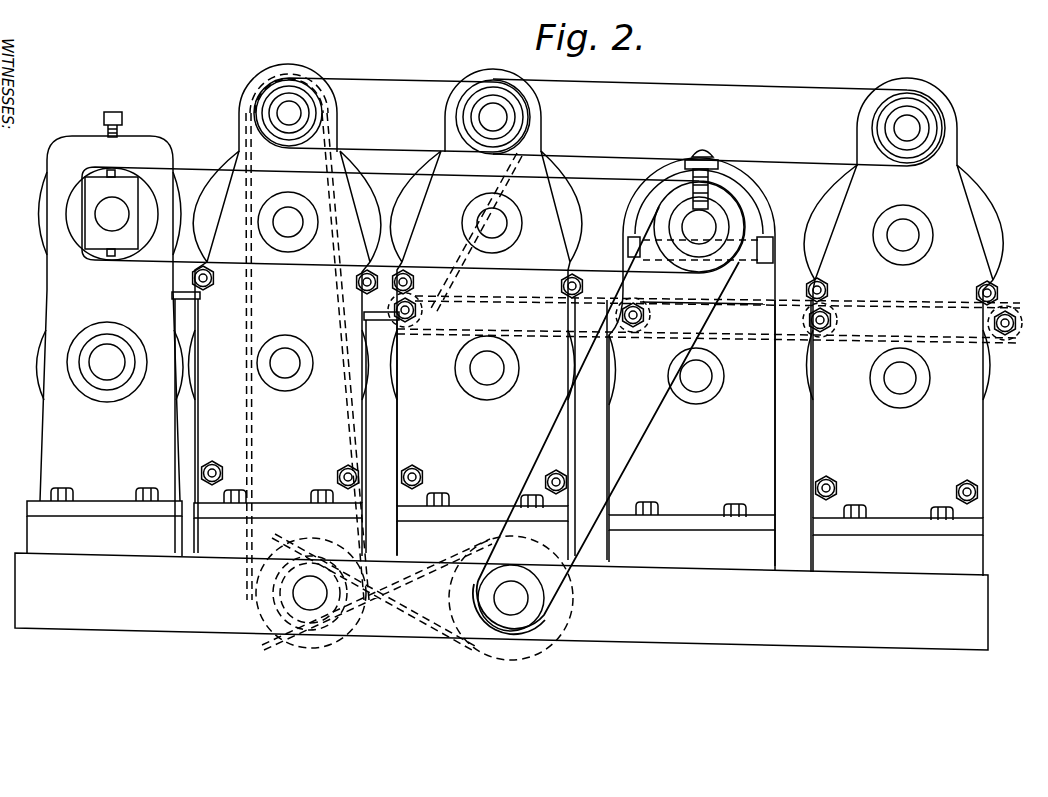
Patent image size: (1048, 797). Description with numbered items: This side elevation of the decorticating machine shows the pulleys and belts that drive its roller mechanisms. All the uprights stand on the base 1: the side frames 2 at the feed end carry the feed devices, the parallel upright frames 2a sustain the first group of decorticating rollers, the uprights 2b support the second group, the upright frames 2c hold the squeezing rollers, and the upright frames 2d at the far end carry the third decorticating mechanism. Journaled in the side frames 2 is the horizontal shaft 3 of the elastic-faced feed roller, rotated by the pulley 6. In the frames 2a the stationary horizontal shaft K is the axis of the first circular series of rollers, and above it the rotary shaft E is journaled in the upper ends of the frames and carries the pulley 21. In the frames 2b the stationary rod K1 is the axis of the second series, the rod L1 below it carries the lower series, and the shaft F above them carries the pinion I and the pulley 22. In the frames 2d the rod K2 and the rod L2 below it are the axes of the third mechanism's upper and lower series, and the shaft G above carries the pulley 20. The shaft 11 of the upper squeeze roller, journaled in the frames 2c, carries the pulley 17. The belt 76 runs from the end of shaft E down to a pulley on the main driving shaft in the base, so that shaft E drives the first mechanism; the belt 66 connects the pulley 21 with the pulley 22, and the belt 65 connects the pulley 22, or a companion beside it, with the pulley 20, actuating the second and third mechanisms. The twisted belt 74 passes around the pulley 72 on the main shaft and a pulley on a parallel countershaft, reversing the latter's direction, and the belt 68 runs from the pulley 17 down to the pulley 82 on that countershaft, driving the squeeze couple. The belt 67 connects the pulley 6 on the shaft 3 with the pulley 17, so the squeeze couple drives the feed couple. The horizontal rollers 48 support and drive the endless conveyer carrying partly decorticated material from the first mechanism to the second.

The base 1 is at (988, 600).
The side frames 2 is at (44, 452).
The parallel upright frames 2a is at (285, 310).
The parallel uprights 2b is at (486, 314).
The parallel upright frames 2c is at (692, 362).
The upright frames 2d is at (913, 327).
The horizontal shaft 3 is at (108, 215).
The pulley 6 is at (83, 238).
The shaft 11 is at (681, 226).
The pulley 17 is at (740, 222).
The pulley 20 is at (927, 128).
The pulley 21 is at (314, 112).
The pulley 22 is at (514, 118).
The horizontal rollers 48 is at (408, 326).
The belt 65 is at (719, 113).
The belt 66 is at (391, 104).
The belt 67 is at (413, 206).
The belt 68 is at (612, 522).
The pulley 72 is at (322, 602).
The twisted belt 74 is at (431, 632).
The belt 76 is at (247, 545).
The pulley 82 is at (542, 601).
The rotary shaft E is at (283, 114).
The shaft F is at (487, 118).
The shaft G is at (895, 129).
The stationary horizontal shaft K is at (290, 229).
The stationary horizontal rod K1 is at (498, 233).
The stationary horizontal rod K2 is at (906, 242).
The pinion I is at (289, 356).
The rod L1 is at (490, 374).
The rod L2 is at (907, 383).